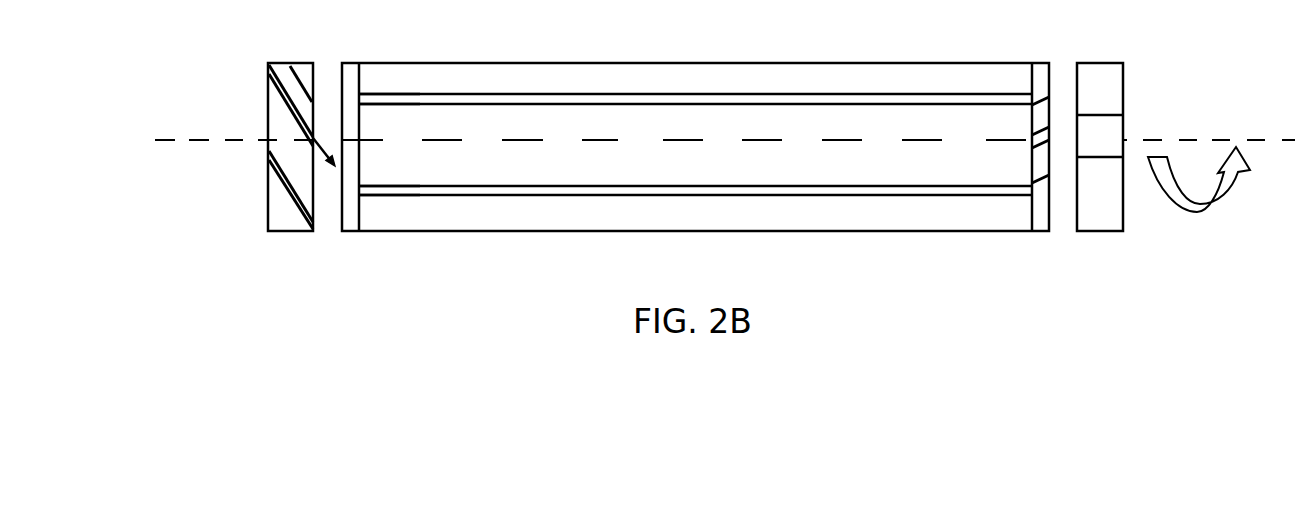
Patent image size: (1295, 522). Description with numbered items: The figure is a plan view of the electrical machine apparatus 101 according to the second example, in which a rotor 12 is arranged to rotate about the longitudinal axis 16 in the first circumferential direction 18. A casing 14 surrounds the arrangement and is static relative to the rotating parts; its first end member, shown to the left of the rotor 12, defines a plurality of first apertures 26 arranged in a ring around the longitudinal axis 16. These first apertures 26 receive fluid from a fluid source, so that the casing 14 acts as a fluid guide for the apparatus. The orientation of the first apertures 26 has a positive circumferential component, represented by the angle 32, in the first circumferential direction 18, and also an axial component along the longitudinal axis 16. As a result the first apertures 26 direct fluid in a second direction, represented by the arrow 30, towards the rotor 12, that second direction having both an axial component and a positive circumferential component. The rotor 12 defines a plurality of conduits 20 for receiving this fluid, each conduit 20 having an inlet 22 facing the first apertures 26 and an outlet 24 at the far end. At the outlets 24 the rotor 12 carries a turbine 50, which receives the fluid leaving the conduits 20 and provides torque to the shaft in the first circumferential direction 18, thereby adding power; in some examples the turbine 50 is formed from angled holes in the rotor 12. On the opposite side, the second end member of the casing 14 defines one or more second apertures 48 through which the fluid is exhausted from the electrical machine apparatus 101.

The electrical machine apparatus 101 is at (186, 81).
The rotor 12 is at (718, 233).
The casing 14 is at (292, 233).
The longitudinal axis 16 is at (1257, 142).
The first circumferential direction 18 is at (1180, 198).
The conduits 20 is at (515, 190).
The inlet 22 is at (370, 84).
The outlet 24 is at (1040, 108).
The first apertures 26 is at (283, 95).
The arrow representing second direction 30 is at (333, 167).
The angle 32 is at (292, 78).
The second apertures 48 is at (1108, 126).
The turbine 50 is at (1030, 140).